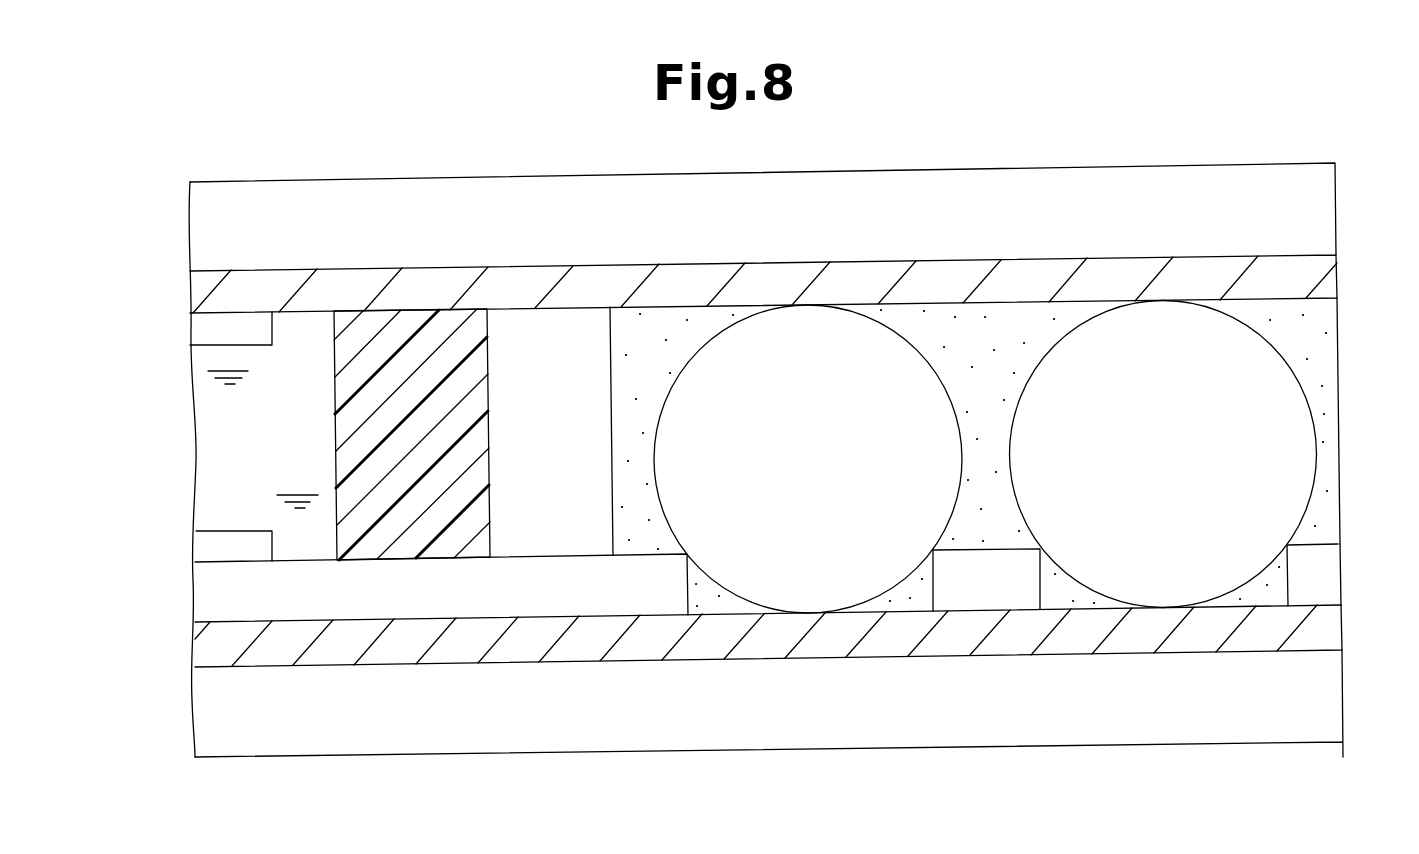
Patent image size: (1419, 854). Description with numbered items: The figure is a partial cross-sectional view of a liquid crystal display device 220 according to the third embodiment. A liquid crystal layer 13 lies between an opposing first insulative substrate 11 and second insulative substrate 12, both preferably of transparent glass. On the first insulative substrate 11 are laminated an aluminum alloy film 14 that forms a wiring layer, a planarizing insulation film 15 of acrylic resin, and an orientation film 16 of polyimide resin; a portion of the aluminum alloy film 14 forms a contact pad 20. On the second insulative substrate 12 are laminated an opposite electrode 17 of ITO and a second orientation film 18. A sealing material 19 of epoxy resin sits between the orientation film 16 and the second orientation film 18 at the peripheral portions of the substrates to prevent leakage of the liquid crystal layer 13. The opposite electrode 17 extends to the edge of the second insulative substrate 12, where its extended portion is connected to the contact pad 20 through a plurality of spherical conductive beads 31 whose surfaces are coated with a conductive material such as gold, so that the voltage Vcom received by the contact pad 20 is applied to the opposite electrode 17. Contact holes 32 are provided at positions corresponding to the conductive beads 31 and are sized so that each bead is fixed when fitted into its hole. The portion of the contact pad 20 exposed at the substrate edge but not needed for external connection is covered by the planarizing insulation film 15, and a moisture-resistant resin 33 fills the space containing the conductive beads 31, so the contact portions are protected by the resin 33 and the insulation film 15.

The liquid crystal display device 220 is at (1097, 108).
The first insulative substrate 11 is at (1174, 745).
The second insulative substrate 12 is at (1337, 200).
The liquid crystal layer 13 is at (203, 432).
The aluminum alloy film 14 is at (635, 657).
The planarizing insulation film 15 is at (200, 590).
The orientation film 16 is at (203, 543).
The opposite electrode 17 is at (202, 292).
The second orientation film 18 is at (200, 328).
The sealing material 19 is at (334, 432).
The contact pad 20 is at (952, 643).
The conductive beads 31 is at (1020, 363).
The contact holes 32 is at (688, 578).
The resin 33 is at (610, 403).